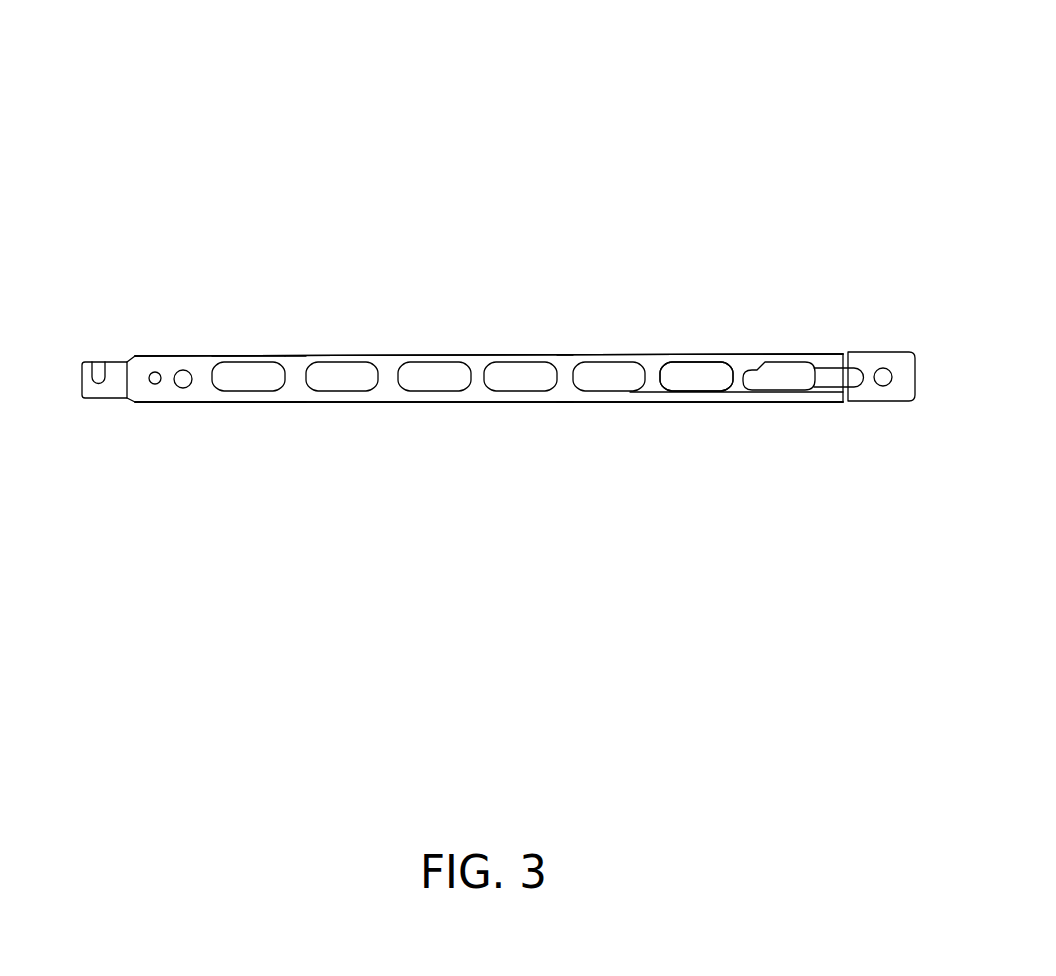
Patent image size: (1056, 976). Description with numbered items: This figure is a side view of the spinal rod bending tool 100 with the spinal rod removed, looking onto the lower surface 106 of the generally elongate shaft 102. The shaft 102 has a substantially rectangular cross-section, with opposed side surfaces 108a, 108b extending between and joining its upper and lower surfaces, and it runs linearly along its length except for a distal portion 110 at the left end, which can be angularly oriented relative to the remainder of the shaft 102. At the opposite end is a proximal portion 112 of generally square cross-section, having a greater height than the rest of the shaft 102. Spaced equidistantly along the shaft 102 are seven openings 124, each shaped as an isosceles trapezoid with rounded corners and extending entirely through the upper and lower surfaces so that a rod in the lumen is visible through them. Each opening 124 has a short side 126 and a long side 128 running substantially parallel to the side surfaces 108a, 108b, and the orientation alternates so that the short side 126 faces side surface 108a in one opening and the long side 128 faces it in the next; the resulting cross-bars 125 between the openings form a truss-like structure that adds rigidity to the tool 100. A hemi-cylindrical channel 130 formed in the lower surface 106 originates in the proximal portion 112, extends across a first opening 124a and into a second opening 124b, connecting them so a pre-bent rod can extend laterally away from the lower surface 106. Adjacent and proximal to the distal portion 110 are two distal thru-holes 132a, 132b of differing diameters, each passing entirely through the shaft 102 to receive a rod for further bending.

The spinal rod bending tool 100 is at (240, 134).
The elongate shaft 102 is at (495, 354).
The lower surface 106 is at (568, 368).
The side surface 108a is at (775, 420).
The side surface 108b is at (684, 330).
The distal portion 110 is at (133, 347).
The proximal portion 112 is at (908, 350).
The openings 124 is at (245, 372).
The first opening 124a is at (787, 373).
The second opening 124b is at (703, 373).
The cross-bars 125 is at (299, 365).
The short side 126 is at (262, 356).
The long side 128 is at (253, 397).
The channel 130 is at (825, 380).
The distal thru-hole 132a is at (153, 387).
The distal thru-hole 132b is at (183, 390).